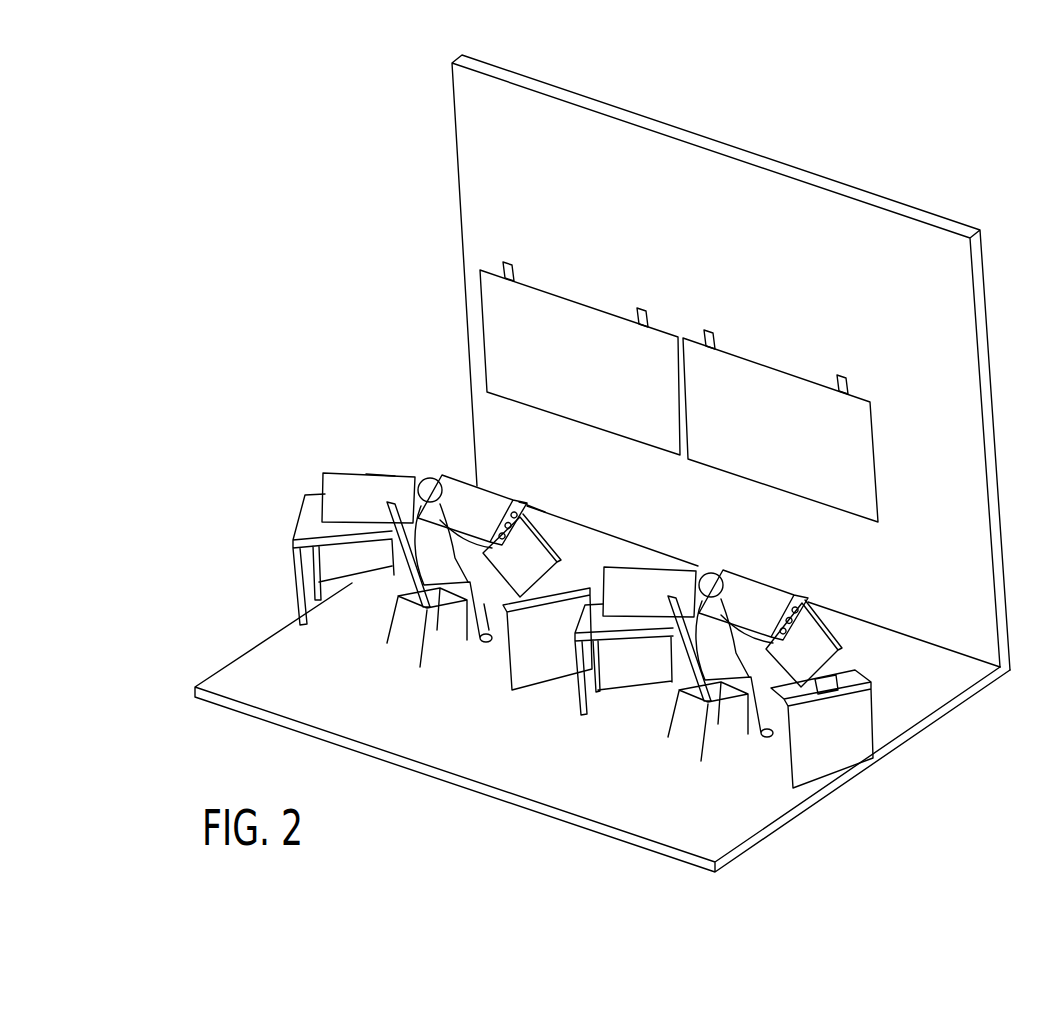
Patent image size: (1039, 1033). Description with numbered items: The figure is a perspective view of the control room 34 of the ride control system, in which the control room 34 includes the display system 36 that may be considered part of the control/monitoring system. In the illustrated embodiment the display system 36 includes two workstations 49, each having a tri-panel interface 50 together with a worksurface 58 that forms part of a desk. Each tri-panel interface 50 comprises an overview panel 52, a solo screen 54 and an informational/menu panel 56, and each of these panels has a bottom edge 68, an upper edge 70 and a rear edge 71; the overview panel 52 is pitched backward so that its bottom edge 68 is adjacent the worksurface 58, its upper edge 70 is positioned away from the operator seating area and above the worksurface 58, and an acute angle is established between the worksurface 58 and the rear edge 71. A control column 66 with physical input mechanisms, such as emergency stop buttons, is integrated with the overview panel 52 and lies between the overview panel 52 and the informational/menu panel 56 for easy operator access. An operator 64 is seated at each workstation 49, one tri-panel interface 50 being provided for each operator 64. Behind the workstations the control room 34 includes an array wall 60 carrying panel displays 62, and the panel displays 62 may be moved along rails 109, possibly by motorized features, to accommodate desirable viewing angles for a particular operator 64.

The control room 34 is at (296, 302).
The display system 36 is at (370, 378).
The workstation 49 is at (276, 478).
The tri-panel interface 50 is at (601, 607).
The overview panel 52 is at (458, 472).
The solo screen 54 is at (368, 474).
The informational/menu panel 56 is at (540, 528).
The worksurface 58 is at (487, 604).
The array wall 60 is at (683, 361).
The panel display 62 is at (578, 299).
The operator 64 is at (430, 528).
The control column 66 is at (523, 502).
The bottom edge 68 is at (388, 506).
The upper edge 70 is at (385, 475).
The rear edge 71 is at (530, 503).
The rail 109 is at (514, 270).